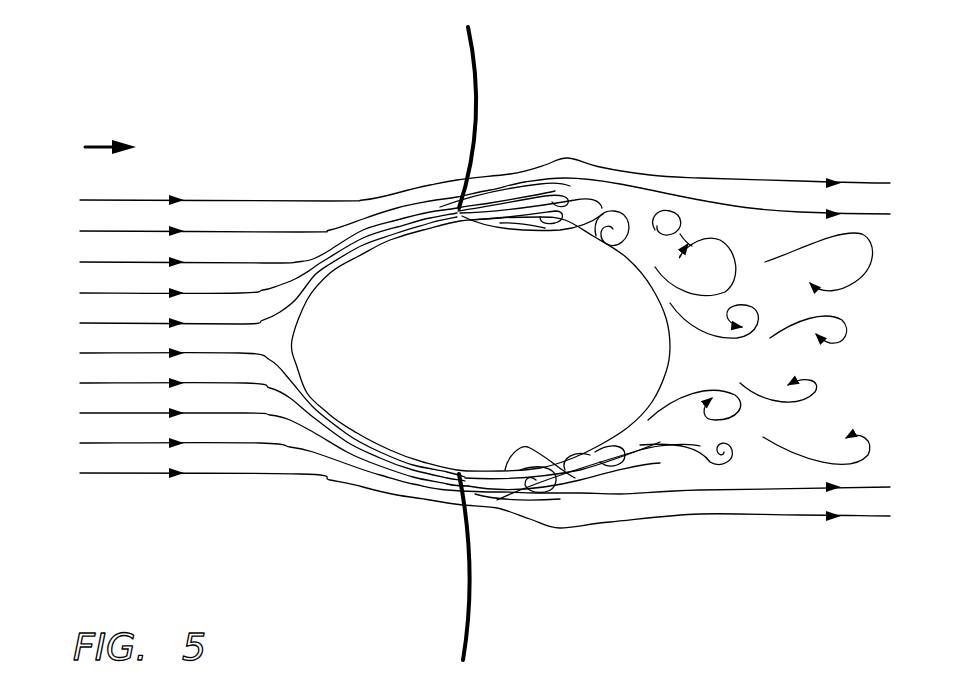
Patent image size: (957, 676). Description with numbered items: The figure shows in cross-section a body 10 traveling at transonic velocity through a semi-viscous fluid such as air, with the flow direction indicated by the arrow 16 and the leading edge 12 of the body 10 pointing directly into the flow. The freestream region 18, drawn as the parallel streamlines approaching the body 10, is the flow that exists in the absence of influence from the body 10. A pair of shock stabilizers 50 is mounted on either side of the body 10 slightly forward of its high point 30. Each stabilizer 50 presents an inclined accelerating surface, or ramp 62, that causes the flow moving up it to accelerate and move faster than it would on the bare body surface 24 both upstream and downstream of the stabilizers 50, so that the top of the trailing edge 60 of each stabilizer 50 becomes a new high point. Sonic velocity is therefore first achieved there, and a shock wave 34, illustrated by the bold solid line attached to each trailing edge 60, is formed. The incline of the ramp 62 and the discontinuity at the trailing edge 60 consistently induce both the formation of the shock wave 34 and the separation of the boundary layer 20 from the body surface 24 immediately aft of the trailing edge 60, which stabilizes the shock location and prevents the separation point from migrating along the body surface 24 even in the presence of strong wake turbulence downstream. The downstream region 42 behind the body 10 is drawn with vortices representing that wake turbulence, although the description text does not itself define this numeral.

The body 10 is at (587, 408).
The leading edge 12 is at (292, 338).
The flow direction arrow 16 is at (105, 147).
The freestream region 18 is at (193, 290).
The boundary layer 20 is at (607, 203).
The body surface 24 is at (535, 455).
The high point 30 is at (497, 206).
The shock wave 34 is at (477, 63).
The downstream vortex region 42 is at (867, 236).
The shock stabilizer 50 is at (445, 208).
The trailing edge 60 is at (480, 206).
The accelerating surface 62 is at (453, 208).